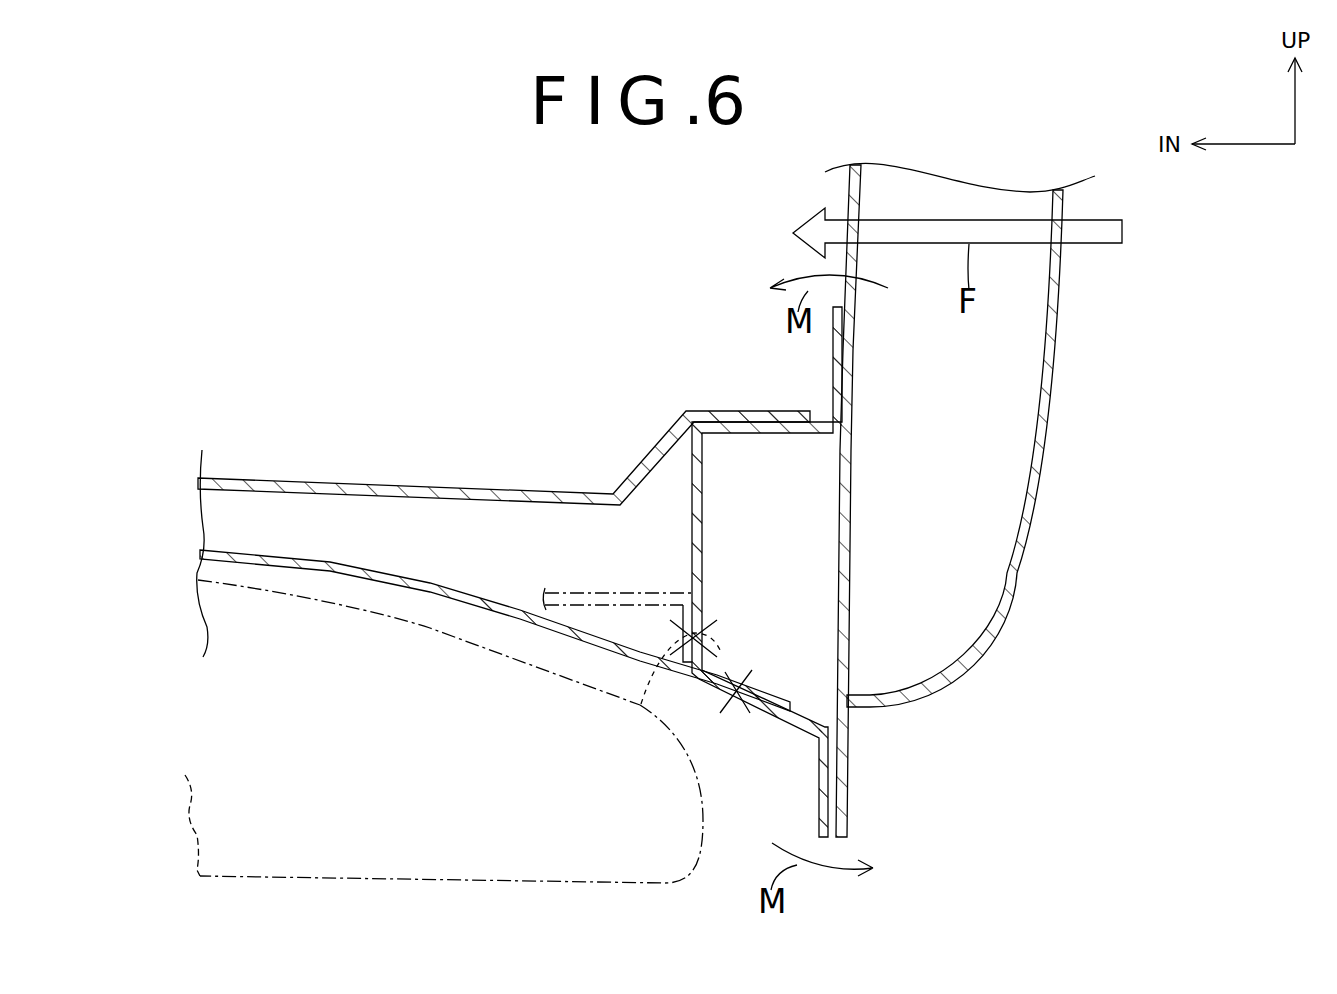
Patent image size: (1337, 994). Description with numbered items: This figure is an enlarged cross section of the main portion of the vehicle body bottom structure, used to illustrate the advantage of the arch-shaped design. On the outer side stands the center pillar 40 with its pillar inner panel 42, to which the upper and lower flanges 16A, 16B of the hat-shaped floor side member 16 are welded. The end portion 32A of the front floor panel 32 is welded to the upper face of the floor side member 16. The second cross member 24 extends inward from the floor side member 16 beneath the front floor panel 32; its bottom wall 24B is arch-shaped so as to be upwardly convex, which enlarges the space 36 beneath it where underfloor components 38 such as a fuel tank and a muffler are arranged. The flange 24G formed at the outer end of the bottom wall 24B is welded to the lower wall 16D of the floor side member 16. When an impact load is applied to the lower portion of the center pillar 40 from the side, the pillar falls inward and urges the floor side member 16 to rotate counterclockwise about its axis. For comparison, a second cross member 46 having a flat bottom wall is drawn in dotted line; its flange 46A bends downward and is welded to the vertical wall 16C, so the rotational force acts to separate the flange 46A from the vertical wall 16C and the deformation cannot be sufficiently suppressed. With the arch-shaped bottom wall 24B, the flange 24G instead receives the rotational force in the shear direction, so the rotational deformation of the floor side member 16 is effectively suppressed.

The floor side member 16 is at (715, 572).
The upper flange of the floor side member 16A is at (834, 352).
The lower flange of the floor side member 16B is at (822, 815).
The vertical wall of the floor side member 16C is at (696, 534).
The lower wall of the floor side member 16D is at (800, 726).
The second cross member 24 is at (495, 661).
The bottom wall 24B is at (490, 612).
The flange 24G is at (780, 722).
The front floor panel 32 is at (504, 427).
The end portion of the front floor panel 32A is at (765, 416).
The space 36 is at (336, 686).
The underfloor components 38 is at (186, 775).
The center pillar 40 is at (1054, 462).
The pillar inner panel 42 is at (849, 182).
The second cross member having a flat bottom wall 46 is at (578, 579).
The flange 46A is at (641, 704).